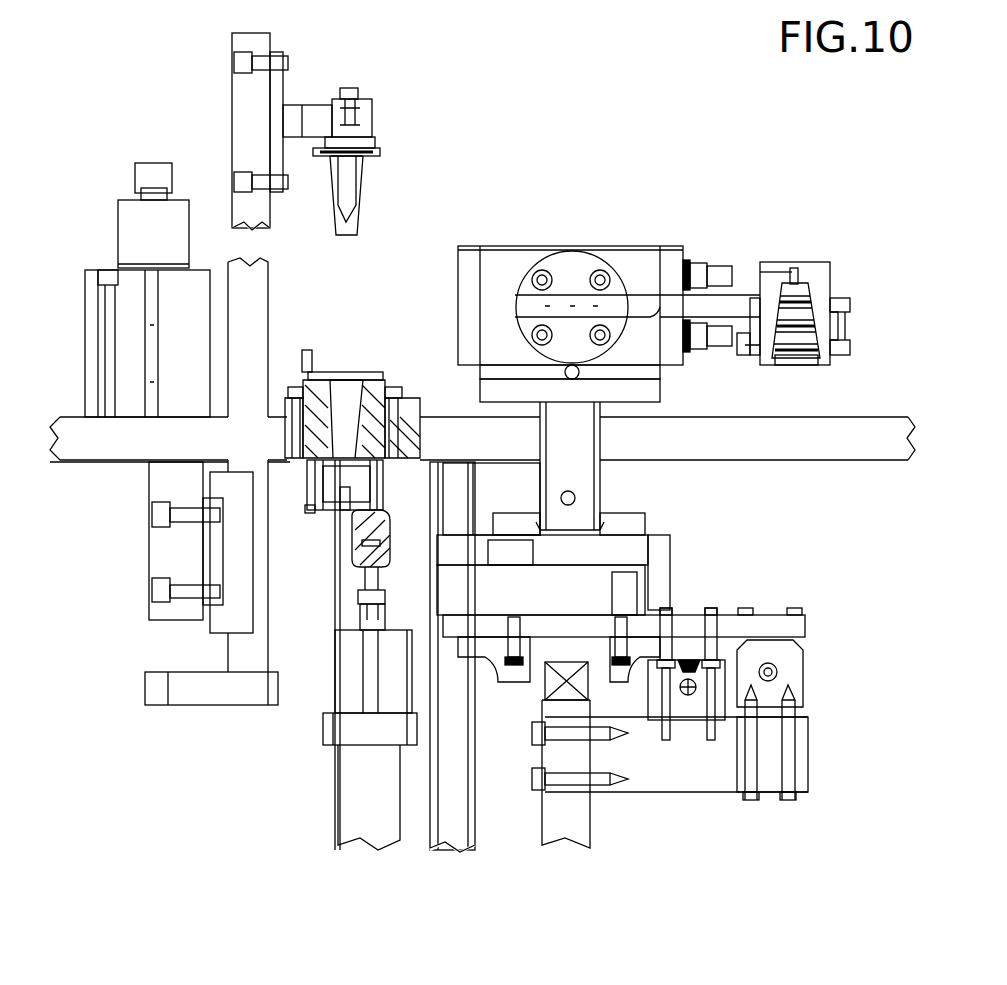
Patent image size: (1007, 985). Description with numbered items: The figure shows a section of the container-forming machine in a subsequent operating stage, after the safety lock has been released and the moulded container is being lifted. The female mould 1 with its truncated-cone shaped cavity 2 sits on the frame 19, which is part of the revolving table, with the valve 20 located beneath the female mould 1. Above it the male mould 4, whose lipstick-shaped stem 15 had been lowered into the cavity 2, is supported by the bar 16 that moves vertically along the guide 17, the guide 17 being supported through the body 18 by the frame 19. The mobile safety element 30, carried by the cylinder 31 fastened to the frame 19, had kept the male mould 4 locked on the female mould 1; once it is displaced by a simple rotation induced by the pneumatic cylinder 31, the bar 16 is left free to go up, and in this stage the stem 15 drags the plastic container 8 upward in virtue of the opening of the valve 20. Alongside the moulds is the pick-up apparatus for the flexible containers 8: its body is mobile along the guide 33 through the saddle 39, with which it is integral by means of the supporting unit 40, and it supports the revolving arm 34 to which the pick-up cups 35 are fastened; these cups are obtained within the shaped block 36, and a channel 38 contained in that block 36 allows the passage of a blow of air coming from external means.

The female mould 1 is at (380, 352).
The truncated-cone shaped cavity 2 is at (347, 388).
The male mould 4 is at (385, 97).
The flexible container 8 is at (355, 222).
The male stem 15 is at (348, 172).
The bar 16 is at (243, 107).
The guide 17 is at (233, 610).
The body 18 is at (172, 556).
The frame 19 is at (98, 448).
The valve 20 is at (318, 518).
The mobile safety element 30 is at (147, 176).
The cylinder 31 is at (125, 316).
The guide 33 is at (550, 685).
The revolving arm 34 is at (653, 307).
The pick-up cup 35 is at (797, 352).
The block 36 is at (818, 284).
The channel 38 is at (780, 272).
The saddle 39 is at (595, 657).
The supporting unit 40 is at (663, 517).